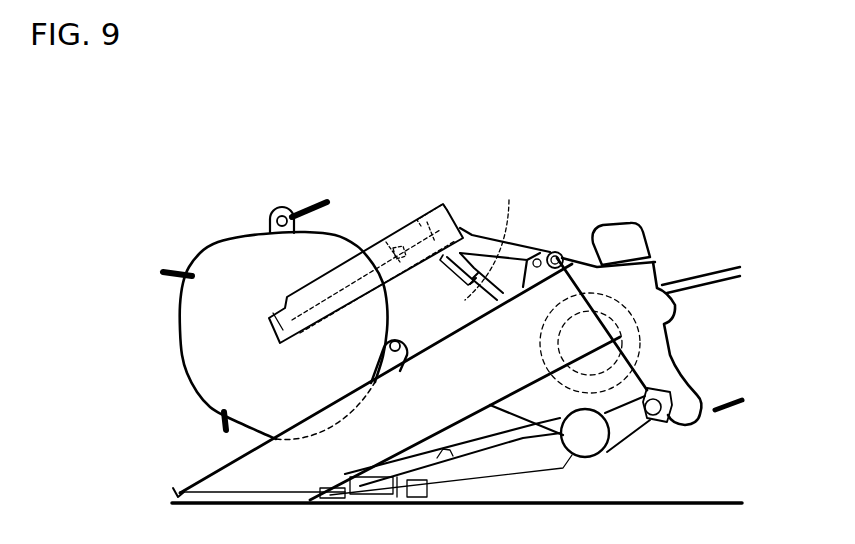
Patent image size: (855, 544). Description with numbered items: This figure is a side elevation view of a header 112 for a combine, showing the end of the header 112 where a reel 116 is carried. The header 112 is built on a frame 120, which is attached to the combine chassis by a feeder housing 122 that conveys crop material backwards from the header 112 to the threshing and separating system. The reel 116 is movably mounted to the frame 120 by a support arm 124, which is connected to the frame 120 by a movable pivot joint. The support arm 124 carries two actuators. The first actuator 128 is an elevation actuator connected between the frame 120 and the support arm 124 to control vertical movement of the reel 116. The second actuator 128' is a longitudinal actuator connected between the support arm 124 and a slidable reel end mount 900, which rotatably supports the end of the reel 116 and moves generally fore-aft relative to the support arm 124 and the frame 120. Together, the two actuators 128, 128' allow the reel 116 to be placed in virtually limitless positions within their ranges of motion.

The header 112 is at (628, 171).
The reel 116 is at (245, 272).
The frame 120 is at (582, 278).
The feeder housing 122 is at (708, 268).
The support arm 124 is at (458, 207).
The elevation actuator 128 is at (478, 191).
The longitudinal actuator 128' is at (366, 232).
The slidable reel end mount 900 is at (265, 335).